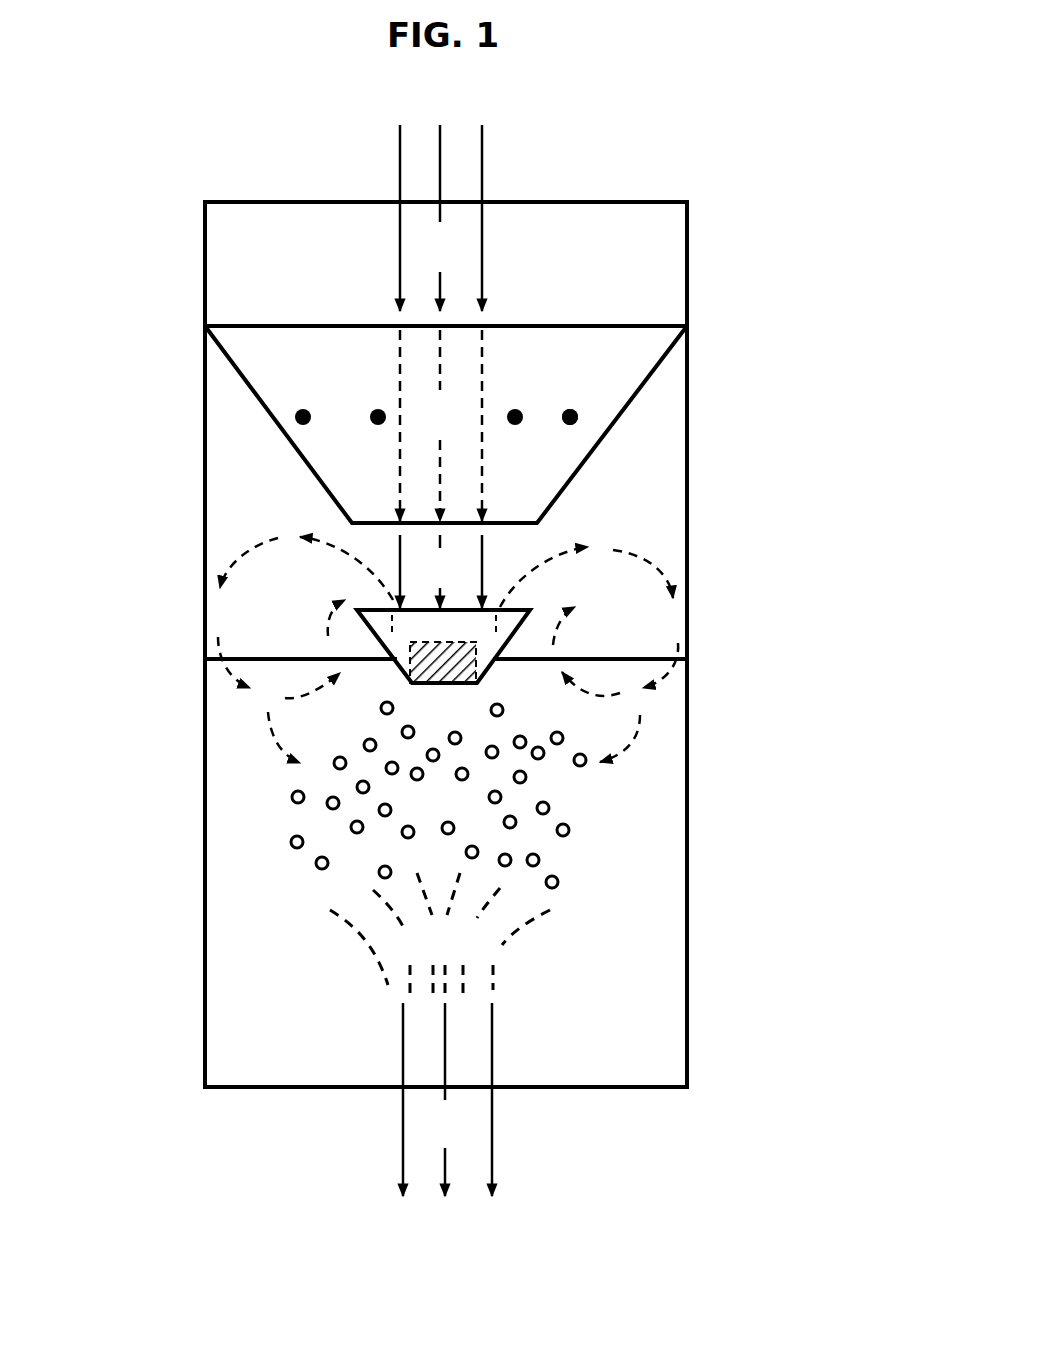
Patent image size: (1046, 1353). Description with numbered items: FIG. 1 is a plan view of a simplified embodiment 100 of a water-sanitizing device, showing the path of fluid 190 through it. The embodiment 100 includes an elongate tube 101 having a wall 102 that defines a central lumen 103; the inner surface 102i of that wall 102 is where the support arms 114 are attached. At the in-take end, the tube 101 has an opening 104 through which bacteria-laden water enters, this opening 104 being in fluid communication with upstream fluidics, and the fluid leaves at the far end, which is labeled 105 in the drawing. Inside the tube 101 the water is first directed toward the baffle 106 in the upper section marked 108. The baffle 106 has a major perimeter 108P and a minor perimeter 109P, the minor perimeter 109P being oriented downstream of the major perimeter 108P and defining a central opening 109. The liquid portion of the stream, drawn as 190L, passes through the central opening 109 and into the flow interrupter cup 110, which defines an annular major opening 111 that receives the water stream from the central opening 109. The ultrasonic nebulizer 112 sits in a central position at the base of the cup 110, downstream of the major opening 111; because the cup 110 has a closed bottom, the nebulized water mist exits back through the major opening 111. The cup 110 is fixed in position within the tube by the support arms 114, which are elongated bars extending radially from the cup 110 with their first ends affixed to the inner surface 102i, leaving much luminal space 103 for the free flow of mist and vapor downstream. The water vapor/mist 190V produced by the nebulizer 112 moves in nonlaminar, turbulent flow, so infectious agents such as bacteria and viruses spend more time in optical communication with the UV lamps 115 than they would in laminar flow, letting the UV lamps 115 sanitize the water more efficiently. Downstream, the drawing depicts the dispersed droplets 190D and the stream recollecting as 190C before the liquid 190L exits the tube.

The embodiment 100 is at (135, 153).
The elongate tube 101 is at (190, 431).
The wall 102 is at (203, 392).
The inner surface 102i is at (218, 497).
The central lumen 103 is at (612, 613).
The opening 104 is at (300, 173).
The outlet 105 is at (278, 1105).
The baffle 106 is at (290, 440).
The upper section 108 is at (274, 297).
The major perimeter 108P is at (363, 328).
The central opening 109 is at (508, 534).
The minor perimeter 109P is at (524, 521).
The flow interrupter cup 110 is at (510, 643).
The annular major opening 111 is at (468, 612).
The ultrasonic nebulizer 112 is at (415, 684).
The support arms 114 is at (268, 660).
The UV lamps 115 is at (572, 410).
The fluid 190 is at (530, 158).
The liquid stream 190L is at (446, 716).
The water vapor/mist 190V is at (448, 650).
The liquid droplets 190D is at (438, 795).
The coalesced liquid stream 190C is at (440, 935).